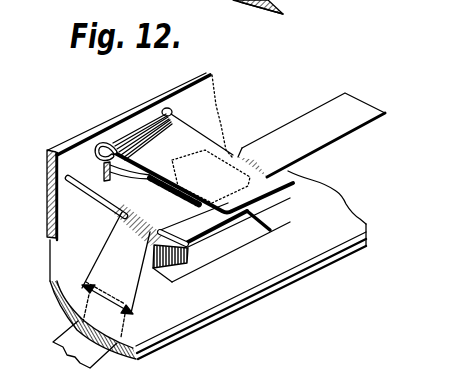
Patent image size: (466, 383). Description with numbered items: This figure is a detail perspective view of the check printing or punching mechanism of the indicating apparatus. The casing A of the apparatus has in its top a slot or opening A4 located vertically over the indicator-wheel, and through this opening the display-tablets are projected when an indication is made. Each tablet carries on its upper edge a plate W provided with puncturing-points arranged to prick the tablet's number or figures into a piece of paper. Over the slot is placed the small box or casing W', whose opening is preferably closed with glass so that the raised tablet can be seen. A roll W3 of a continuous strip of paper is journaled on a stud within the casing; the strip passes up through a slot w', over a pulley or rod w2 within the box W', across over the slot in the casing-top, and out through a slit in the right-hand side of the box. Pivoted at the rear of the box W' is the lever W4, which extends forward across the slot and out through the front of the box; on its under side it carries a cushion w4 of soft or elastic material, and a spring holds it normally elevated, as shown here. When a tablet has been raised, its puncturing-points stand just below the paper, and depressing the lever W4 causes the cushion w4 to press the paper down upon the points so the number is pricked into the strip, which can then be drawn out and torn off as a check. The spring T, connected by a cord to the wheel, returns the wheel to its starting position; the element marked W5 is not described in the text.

The spring T is at (264, 12).
The casing A is at (206, 254).
The slot or opening in casing-top A4 is at (258, 236).
The box or casing W' is at (151, 138).
The roll of paper strip W3 is at (311, 135).
The lever W4 is at (195, 160).
The clip W5 is at (126, 168).
The pulley or rod w2 is at (96, 197).
The cushion w4 is at (175, 196).
The slot w' is at (135, 270).
The plate W is at (78, 346).